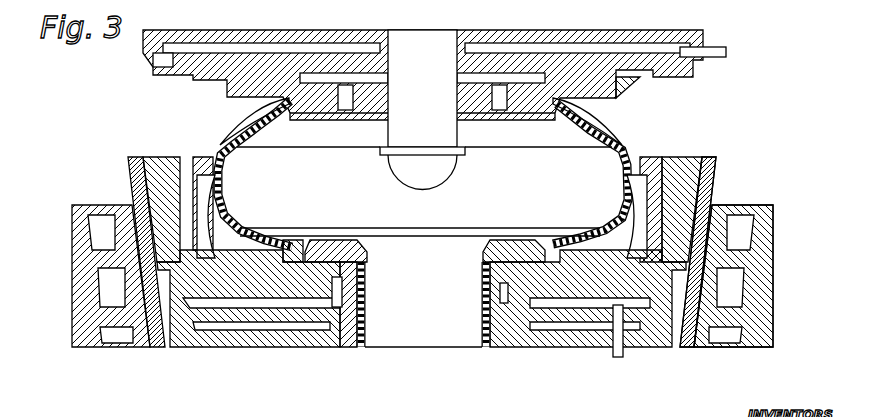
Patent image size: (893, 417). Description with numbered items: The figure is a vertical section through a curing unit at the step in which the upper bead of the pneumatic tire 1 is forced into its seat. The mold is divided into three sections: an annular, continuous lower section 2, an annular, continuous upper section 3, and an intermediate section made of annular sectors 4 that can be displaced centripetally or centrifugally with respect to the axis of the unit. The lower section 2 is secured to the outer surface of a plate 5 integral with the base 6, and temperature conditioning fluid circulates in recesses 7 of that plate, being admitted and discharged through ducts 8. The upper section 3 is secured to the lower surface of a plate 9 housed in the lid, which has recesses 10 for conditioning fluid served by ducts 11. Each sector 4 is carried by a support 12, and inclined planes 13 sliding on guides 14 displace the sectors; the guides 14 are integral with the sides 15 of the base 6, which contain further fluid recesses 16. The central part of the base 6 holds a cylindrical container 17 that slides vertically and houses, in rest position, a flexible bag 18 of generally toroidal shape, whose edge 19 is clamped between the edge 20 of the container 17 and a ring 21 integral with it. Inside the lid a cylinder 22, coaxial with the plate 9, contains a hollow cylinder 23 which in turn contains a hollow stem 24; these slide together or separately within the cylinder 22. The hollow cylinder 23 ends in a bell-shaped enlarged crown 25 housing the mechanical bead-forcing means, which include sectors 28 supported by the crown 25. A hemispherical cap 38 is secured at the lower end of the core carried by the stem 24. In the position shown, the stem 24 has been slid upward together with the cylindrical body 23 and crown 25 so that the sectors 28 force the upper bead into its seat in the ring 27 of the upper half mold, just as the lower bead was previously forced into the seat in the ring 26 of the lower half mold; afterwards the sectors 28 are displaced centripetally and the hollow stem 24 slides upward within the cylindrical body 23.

The pneumatic tire 1 is at (630, 128).
The lower section 2 is at (603, 266).
The upper section 3 is at (617, 83).
The annular sectors 4 is at (656, 166).
The plate 5 is at (501, 290).
The base 6 is at (270, 342).
The recesses 7 is at (580, 308).
The ducts 8 is at (624, 356).
The plate 9 is at (584, 36).
The recesses 10 is at (631, 46).
The ducts 11 is at (724, 44).
The support 12 is at (690, 157).
The inclined planes 13 is at (710, 200).
The guides 14 is at (715, 207).
The sides 15 is at (768, 200).
The recesses 16 is at (737, 293).
The cylindrical container 17 is at (347, 338).
The flexible bag 18 is at (366, 320).
The edge 19 is at (522, 247).
The edge 20 is at (333, 242).
The ring 21 is at (350, 278).
The cylinder 22 is at (481, 50).
The hollow cylinder 23 is at (463, 40).
The stem 24 is at (411, 45).
The bell-shaped enlarged crown 25 is at (527, 118).
The ring 26 is at (296, 238).
The ring 27 is at (563, 98).
The sectors 28 is at (502, 123).
The hemispherical cap 38 is at (407, 170).